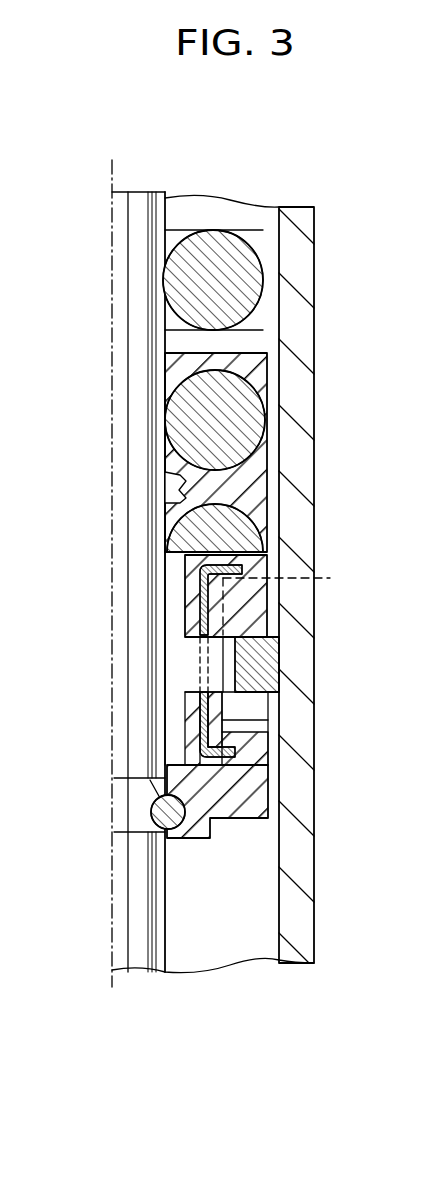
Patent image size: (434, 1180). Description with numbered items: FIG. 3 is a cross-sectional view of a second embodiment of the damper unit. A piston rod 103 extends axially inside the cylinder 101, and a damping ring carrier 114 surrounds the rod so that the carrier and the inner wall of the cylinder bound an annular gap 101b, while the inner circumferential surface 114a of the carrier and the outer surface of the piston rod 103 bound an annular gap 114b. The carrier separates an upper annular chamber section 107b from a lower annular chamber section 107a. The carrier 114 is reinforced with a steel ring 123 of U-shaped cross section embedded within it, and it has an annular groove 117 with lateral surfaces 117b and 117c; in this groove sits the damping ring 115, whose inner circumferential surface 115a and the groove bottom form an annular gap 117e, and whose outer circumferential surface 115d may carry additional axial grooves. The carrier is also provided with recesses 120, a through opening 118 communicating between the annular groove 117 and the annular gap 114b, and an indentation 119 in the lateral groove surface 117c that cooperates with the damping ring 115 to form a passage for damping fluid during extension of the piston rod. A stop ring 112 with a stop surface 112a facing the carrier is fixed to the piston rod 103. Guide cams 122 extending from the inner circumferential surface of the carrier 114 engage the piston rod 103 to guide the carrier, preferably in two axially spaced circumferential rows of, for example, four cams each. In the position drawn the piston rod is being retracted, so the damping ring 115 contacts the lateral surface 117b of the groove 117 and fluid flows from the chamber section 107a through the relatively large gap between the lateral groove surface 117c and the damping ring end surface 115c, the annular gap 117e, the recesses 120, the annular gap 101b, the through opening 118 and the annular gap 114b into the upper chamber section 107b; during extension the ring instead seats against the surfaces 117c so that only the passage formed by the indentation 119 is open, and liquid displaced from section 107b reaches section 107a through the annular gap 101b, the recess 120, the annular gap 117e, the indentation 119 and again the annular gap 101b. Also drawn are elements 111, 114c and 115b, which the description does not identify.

The cylinder 101 is at (305, 247).
The annular gap 101b is at (272, 483).
The piston rod 103 is at (135, 200).
The annular chamber section 107a is at (270, 925).
The annular chamber section 107b is at (263, 323).
The O-ring 111 is at (228, 238).
The stop ring 112 is at (257, 810).
The stop surface 112a is at (250, 777).
The damping ring carrier 114 is at (260, 463).
The inner circumferential surface of damping ring carrier 114a is at (182, 563).
The annular gap 114b is at (172, 585).
The seal ring 114c is at (200, 790).
The damping ring 115 is at (267, 668).
The inner circumferential surface of damping ring 115a is at (195, 680).
The retainer upper face 115b is at (272, 628).
The damping ring end surface 115c is at (265, 712).
The outer circumferential surface of damping ring 115d is at (282, 688).
The annular groove 117 is at (275, 790).
The lateral surface of annular groove 117b is at (240, 648).
The lateral groove surface 117c is at (265, 724).
The annular gap 117e is at (217, 668).
The through opening 118 is at (192, 655).
The indentation 119 is at (242, 708).
The recesses 120 is at (322, 578).
The guide cams 122 is at (172, 490).
The steel ring 123 is at (200, 600).